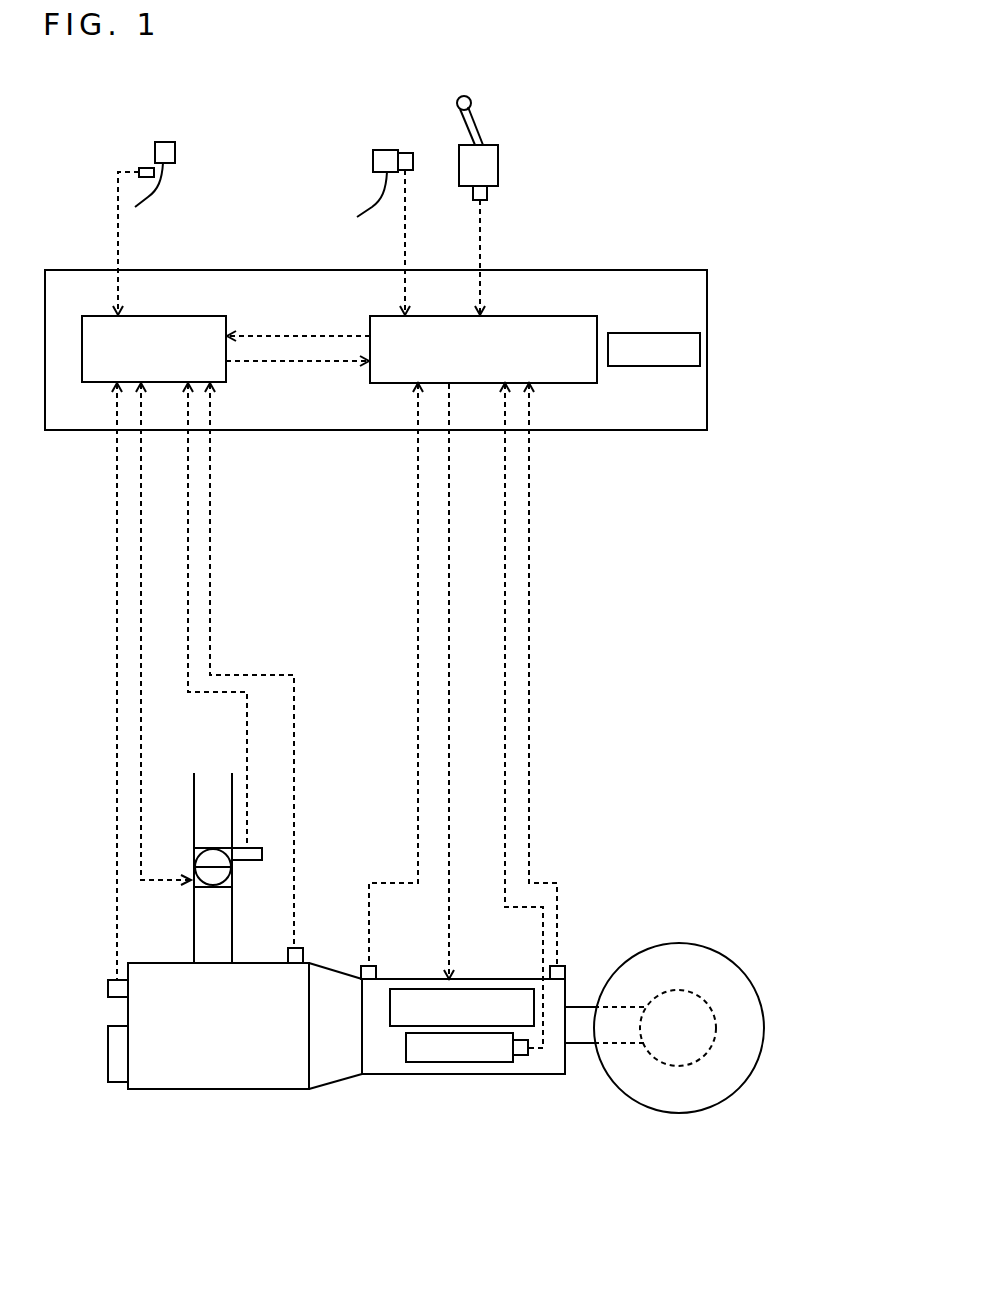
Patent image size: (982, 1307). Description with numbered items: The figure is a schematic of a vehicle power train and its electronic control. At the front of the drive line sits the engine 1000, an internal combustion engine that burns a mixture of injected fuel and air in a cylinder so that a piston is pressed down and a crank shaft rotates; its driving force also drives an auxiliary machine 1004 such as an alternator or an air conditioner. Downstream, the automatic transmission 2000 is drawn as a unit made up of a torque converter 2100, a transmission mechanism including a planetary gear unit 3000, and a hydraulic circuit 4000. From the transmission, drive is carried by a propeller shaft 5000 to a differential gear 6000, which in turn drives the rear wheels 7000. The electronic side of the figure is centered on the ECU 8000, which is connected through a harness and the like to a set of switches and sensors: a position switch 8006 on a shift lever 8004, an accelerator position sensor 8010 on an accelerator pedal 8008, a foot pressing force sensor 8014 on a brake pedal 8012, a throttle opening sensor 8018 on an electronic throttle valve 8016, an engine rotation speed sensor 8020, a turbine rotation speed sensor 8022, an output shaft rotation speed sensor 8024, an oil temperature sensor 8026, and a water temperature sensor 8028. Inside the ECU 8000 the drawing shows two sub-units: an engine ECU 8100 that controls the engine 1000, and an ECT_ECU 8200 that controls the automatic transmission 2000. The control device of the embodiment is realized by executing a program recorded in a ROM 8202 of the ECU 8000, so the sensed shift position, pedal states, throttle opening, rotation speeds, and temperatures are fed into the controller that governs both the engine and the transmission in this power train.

The engine 1000 is at (216, 1092).
The auxiliary machine 1004 is at (108, 1054).
The automatic transmission 2000 is at (395, 1078).
The torque converter 2100 is at (336, 1074).
The planetary gear unit 3000 is at (492, 990).
The hydraulic circuit 4000 is at (440, 1062).
The propeller shaft 5000 is at (582, 1048).
The differential gear 6000 is at (688, 991).
The rear wheels 7000 is at (680, 1114).
The ECU 8000 is at (100, 270).
The shift lever 8004 is at (480, 128).
The position switch 8006 is at (487, 193).
The accelerator pedal 8008 is at (160, 180).
The accelerator position sensor 8010 is at (142, 168).
The brake pedal 8012 is at (383, 180).
The foot pressing force sensor 8014 is at (403, 153).
The electronic throttle valve 8016 is at (196, 855).
The throttle opening sensor 8018 is at (238, 862).
The engine rotation speed sensor 8020 is at (108, 988).
The turbine rotation speed sensor 8022 is at (377, 968).
The output shaft rotation speed sensor 8024 is at (567, 970).
The oil temperature sensor 8026 is at (520, 1055).
The water temperature sensor 8028 is at (298, 948).
The engine ECU 8100 is at (205, 316).
The ECT_ECU 8200 is at (555, 316).
The ROM 8202 is at (658, 333).